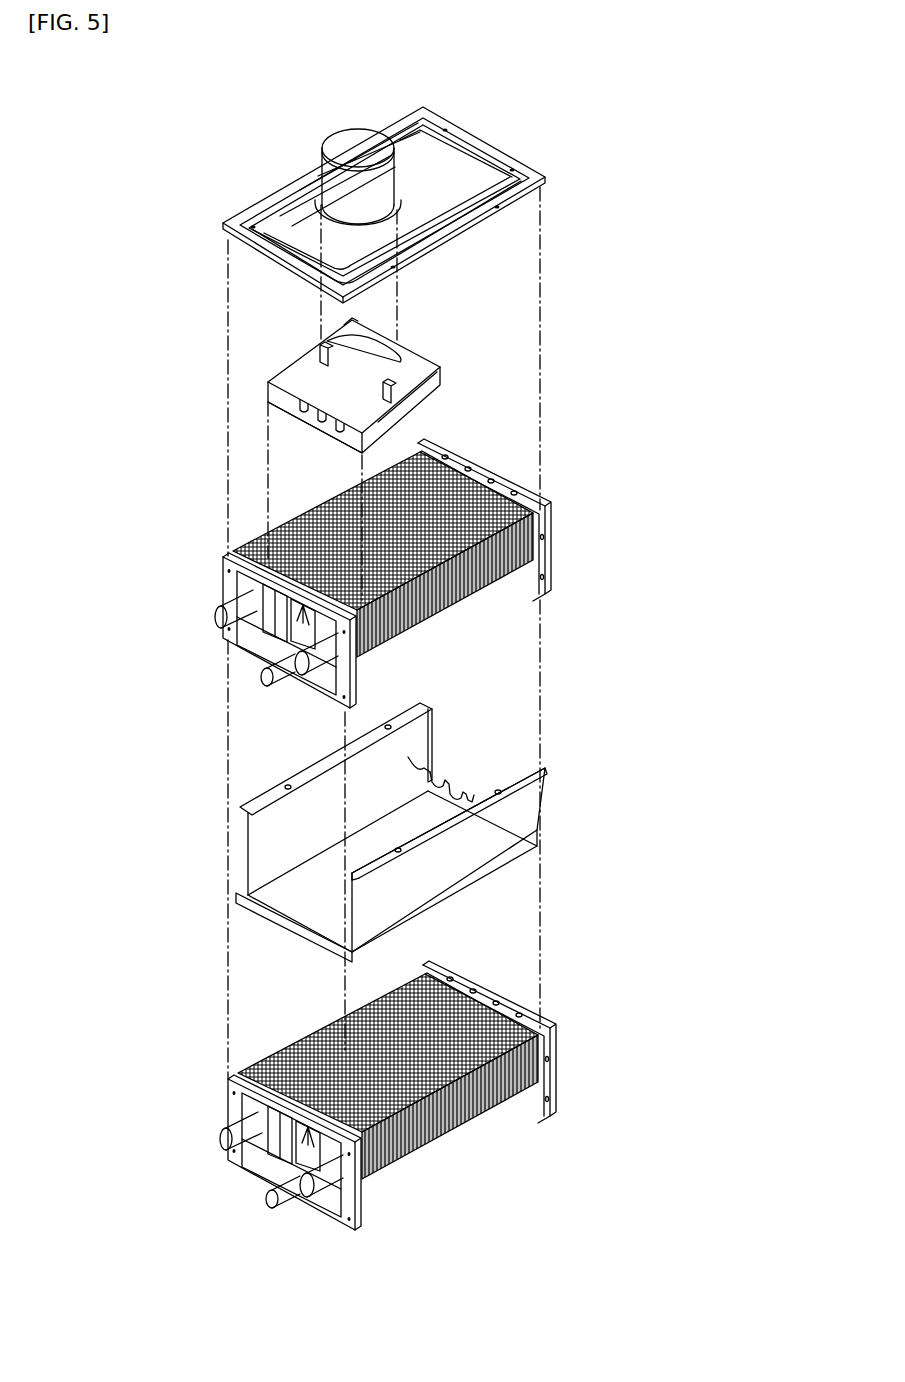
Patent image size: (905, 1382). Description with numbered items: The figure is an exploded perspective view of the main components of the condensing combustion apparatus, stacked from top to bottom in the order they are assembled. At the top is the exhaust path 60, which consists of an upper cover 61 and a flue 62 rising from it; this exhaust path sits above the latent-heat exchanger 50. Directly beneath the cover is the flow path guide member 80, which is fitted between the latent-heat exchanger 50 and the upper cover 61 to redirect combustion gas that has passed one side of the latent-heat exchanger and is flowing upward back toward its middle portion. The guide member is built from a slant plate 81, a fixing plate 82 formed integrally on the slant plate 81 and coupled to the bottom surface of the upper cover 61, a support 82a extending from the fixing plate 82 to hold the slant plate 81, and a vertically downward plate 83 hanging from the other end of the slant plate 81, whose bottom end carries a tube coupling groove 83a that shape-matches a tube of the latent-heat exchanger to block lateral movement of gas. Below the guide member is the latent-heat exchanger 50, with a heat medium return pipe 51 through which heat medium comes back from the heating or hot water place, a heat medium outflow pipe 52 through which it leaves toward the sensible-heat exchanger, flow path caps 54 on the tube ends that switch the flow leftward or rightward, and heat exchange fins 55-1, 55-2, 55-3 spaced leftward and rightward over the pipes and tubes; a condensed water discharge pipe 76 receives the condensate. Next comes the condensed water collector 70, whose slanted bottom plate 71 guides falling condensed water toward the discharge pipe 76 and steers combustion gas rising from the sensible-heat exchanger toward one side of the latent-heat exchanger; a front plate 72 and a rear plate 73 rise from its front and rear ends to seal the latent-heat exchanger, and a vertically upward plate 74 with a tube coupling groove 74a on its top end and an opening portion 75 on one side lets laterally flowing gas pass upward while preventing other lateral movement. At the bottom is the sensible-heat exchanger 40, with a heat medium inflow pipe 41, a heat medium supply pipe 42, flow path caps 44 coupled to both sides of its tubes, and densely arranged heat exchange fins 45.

The sensible-heat exchanger 40 is at (353, 1106).
The heat medium inflow pipe 41 is at (210, 1142).
The heat medium supply pipe 42 is at (313, 1203).
The flow path caps 44 is at (268, 1167).
The heat exchange fins 45 is at (397, 1070).
The latent-heat exchanger 50 is at (361, 597).
The heat medium return pipe 51 is at (301, 690).
The heat medium outflow pipe 52 is at (190, 609).
The flow path caps 54 is at (246, 642).
The heat exchange fin 55-1 is at (383, 554).
The heat exchange fin 55-2 is at (334, 630).
The heat exchange fin 55-3 is at (516, 525).
The condensed water discharge pipe 76 is at (239, 704).
The exhaust path 60 is at (339, 186).
The upper cover 61 is at (433, 160).
The flue 62 is at (347, 142).
The condensed water collector 70 is at (354, 841).
The bottom plate 71 is at (320, 918).
The front plate 72 is at (427, 882).
The rear plate 73 is at (270, 836).
The vertically upward plate 74 is at (460, 749).
The tube coupling groove 74a is at (457, 786).
The opening portion 75 is at (477, 790).
The flow path guide member 80 is at (333, 399).
The slant plate 81 is at (367, 404).
The fixing plate 82 is at (400, 352).
The support 82a is at (391, 388).
The vertically downward plate 83 is at (315, 451).
The tube coupling groove 83a is at (321, 430).